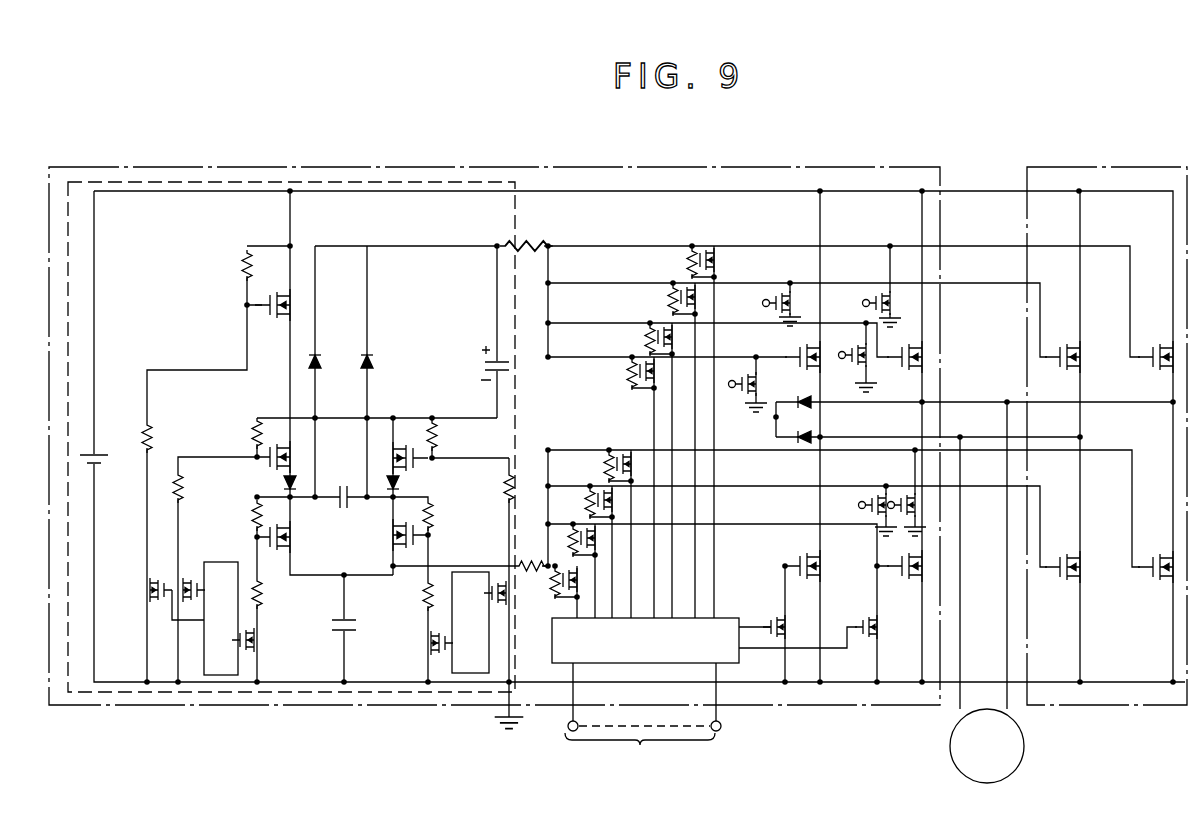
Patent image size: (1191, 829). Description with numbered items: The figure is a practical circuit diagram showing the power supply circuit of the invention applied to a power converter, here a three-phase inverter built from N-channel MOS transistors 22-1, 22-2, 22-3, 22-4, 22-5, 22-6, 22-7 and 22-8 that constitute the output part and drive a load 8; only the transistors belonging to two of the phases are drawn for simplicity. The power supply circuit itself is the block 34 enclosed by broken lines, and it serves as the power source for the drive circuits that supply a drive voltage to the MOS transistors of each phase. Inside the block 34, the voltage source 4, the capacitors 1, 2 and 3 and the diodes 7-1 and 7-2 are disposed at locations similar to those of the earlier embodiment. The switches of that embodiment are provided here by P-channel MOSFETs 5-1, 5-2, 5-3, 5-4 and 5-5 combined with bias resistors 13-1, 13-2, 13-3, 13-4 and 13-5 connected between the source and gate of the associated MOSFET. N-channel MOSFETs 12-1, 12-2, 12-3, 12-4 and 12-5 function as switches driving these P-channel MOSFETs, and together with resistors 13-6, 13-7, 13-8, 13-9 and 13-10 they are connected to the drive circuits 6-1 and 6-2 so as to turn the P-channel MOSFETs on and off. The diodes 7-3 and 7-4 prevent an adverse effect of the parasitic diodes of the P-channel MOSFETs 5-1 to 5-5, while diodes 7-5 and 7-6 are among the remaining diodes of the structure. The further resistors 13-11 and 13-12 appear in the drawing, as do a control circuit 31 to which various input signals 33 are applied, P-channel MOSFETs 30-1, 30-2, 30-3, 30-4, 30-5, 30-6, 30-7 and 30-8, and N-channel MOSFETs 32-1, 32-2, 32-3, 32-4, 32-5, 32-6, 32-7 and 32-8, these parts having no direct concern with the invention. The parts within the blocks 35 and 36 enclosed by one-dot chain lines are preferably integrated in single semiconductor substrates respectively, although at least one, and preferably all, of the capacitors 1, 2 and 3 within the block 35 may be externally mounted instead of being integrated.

The capacitor 1 is at (344, 479).
The capacitor 2 is at (359, 627).
The capacitor 3 is at (482, 366).
The voltage source 4 is at (110, 451).
The P-channel MOSFET 5-1 is at (278, 318).
The P-channel MOSFET 5-2 is at (403, 450).
The P-channel MOSFET 5-3 is at (293, 535).
The P-channel MOSFET 5-4 is at (270, 449).
The P-channel MOSFET 5-5 is at (390, 540).
The drive circuit 6-1 is at (232, 562).
The drive circuit 6-2 is at (482, 572).
The diode 7-1 is at (320, 356).
The diode 7-2 is at (372, 356).
The diode 7-3 is at (284, 485).
The diode 7-4 is at (399, 486).
The diode 7-5 is at (790, 438).
The diode 7-6 is at (804, 397).
The load 8 is at (1025, 750).
The N-channel MOSFET 12-1 is at (147, 587).
The N-channel MOSFET 12-2 is at (509, 591).
The N-channel MOSFET 12-3 is at (261, 646).
The N-channel MOSFET 12-4 is at (196, 570).
The N-channel MOSFET 12-5 is at (425, 648).
The bias resistor 13-1 is at (244, 265).
The bias resistor 13-2 is at (436, 438).
The bias resistor 13-3 is at (251, 509).
The bias resistor 13-4 is at (251, 441).
The bias resistor 13-5 is at (433, 522).
The resistor 13-6 is at (153, 432).
The resistor 13-7 is at (504, 489).
The resistor 13-8 is at (261, 594).
The resistor 13-9 is at (184, 485).
The resistor 13-10 is at (423, 590).
The resistor 13-11 is at (520, 557).
The resistor 13-12 is at (526, 241).
The N-channel MOS transistor 22-1 is at (786, 356).
The N-channel MOS transistor 22-2 is at (798, 558).
The N-channel MOS transistor 22-3 is at (905, 374).
The N-channel MOS transistor 22-4 is at (905, 588).
The N-channel MOS transistor 22-5 is at (1060, 375).
The N-channel MOS transistor 22-6 is at (1060, 588).
The N-channel MOS transistor 22-7 is at (1152, 375).
The N-channel MOS transistor 22-8 is at (1152, 588).
The P-channel MOSFET 30-1 is at (647, 348).
The P-channel MOSFET 30-2 is at (562, 596).
The P-channel MOSFET 30-3 is at (670, 310).
The P-channel MOSFET 30-4 is at (590, 502).
The P-channel MOSFET 30-5 is at (690, 273).
The P-channel MOSFET 30-6 is at (608, 475).
The P-channel MOSFET 30-7 is at (712, 242).
The P-channel MOSFET 30-8 is at (632, 449).
The control circuit 31 is at (739, 660).
The N-channel MOSFET 32-1 is at (741, 391).
The N-channel MOSFET 32-2 is at (768, 614).
The N-channel MOSFET 32-3 is at (844, 375).
The N-channel MOSFET 32-4 is at (860, 614).
The N-channel MOSFET 32-5 is at (766, 310).
The N-channel MOSFET 32-6 is at (880, 483).
The N-channel MOSFET 32-7 is at (866, 310).
The N-channel MOSFET 32-8 is at (901, 483).
The input signals 33 is at (643, 714).
The block 34 is at (515, 186).
The block 35 is at (706, 165).
The block 36 is at (1096, 165).